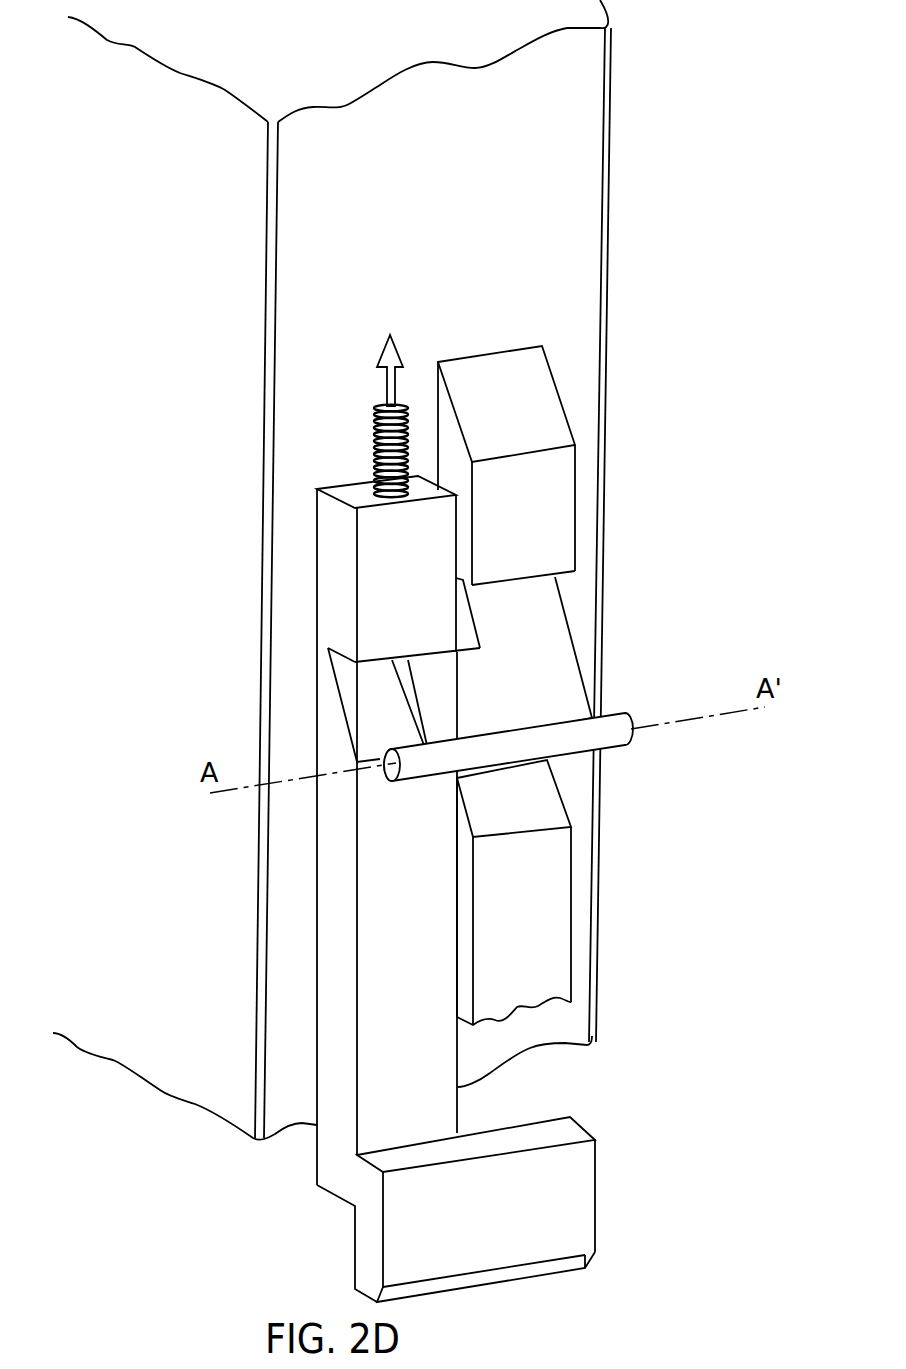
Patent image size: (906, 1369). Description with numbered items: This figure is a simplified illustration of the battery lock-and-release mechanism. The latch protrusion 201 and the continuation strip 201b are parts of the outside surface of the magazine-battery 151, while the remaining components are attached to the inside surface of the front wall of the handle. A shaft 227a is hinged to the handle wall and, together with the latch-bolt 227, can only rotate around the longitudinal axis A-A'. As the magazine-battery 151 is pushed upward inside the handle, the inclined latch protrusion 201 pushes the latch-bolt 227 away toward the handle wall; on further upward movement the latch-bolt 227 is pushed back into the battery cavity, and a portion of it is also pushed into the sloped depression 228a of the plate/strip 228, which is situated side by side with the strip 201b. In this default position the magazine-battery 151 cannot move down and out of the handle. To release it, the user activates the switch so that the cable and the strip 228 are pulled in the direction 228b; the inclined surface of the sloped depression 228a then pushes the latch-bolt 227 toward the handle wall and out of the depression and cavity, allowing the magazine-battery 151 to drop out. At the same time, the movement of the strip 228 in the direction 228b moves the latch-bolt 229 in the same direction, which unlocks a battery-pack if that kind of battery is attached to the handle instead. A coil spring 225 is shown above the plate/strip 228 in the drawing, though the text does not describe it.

The magazine-battery 151 is at (302, 182).
The latch protrusion 201 is at (553, 500).
The strip 201b is at (572, 915).
The spring 225 is at (378, 435).
The latch-bolt 227 is at (557, 633).
The shaft 227a is at (625, 710).
The plate/strip 228 is at (382, 863).
The sloped depression 228a is at (358, 692).
The direction 228b is at (383, 350).
The latch-bolt 229 is at (573, 1187).